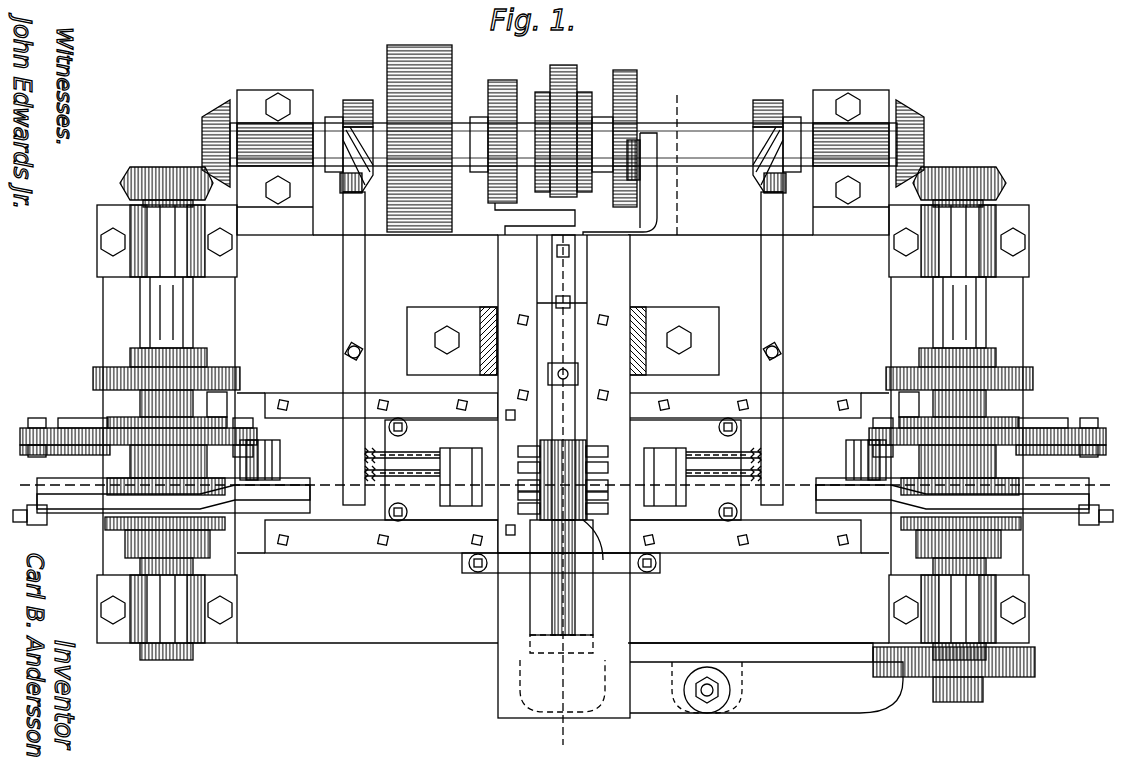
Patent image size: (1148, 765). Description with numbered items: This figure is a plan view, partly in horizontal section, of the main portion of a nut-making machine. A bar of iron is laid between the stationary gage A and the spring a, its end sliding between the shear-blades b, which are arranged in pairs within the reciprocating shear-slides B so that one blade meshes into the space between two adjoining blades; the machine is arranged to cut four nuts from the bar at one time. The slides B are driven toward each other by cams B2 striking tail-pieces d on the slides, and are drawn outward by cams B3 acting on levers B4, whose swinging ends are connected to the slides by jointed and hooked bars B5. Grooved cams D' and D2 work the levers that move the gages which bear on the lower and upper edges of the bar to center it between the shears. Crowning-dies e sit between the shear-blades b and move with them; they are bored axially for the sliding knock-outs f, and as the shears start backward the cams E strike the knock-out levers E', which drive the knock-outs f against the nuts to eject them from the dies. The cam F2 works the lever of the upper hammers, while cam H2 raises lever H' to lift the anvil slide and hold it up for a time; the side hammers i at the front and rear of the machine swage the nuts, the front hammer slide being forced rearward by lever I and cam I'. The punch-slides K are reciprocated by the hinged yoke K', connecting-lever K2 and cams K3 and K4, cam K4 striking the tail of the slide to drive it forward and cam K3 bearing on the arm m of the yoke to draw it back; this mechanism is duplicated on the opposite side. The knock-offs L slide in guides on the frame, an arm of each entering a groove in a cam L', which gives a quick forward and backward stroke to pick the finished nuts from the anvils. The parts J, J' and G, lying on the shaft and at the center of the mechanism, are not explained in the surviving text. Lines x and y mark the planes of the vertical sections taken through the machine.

The shear-slides B is at (563, 439).
The cams E is at (563, 133).
The knock-out levers E' is at (339, 348).
The gear wheel J is at (502, 128).
The grooved cam D' is at (537, 131).
The cam F2 is at (563, 65).
The cam D2 is at (590, 92).
The cam H2 is at (630, 70).
The lever J' is at (519, 219).
The lever H' is at (620, 186).
The side hammers i is at (545, 362).
The knock-offs L is at (492, 467).
The cams L' is at (575, 398).
The bevel gear G is at (555, 471).
The shear-blades b is at (563, 474).
The crowning-dies e is at (563, 473).
The knock-outs f is at (563, 458).
The stationary gage A is at (552, 592).
The spring a is at (593, 536).
The lever I is at (766, 678).
The cam I' is at (970, 672).
The cam K3 is at (534, 404).
The arm m is at (132, 415).
The hinged yoke K' is at (563, 435).
The connecting-lever K2 is at (564, 451).
The cam K4 is at (563, 463).
The punch-slides K is at (563, 460).
The cams B2 is at (563, 485).
The jointed and hooked bars B5 is at (563, 498).
The tail-piece d is at (563, 501).
The levers B4 is at (1077, 550).
The cams B3 is at (563, 540).
The section line x x is at (562, 484).
The section line y y is at (614, 415).